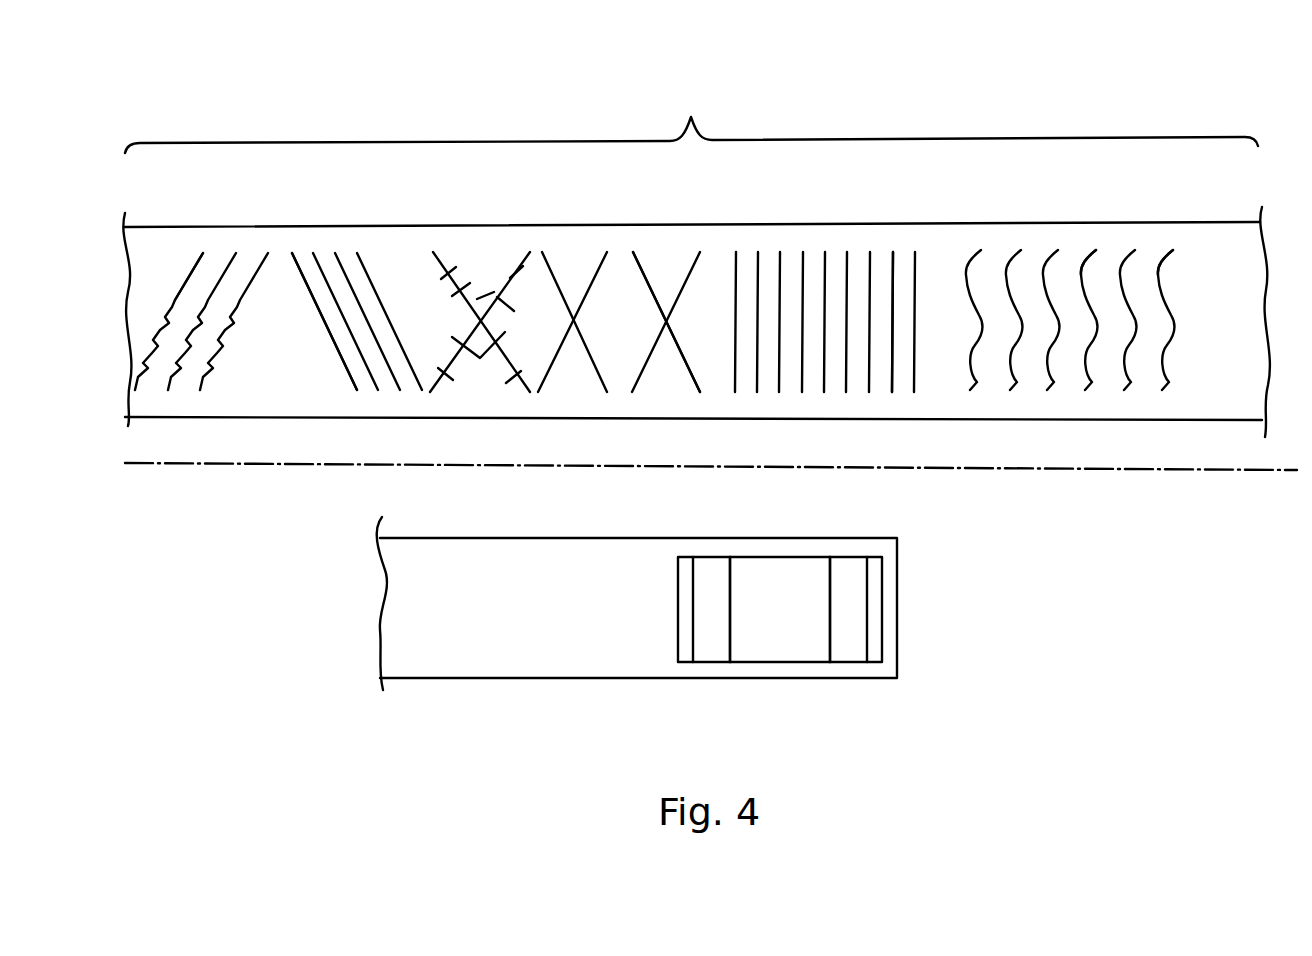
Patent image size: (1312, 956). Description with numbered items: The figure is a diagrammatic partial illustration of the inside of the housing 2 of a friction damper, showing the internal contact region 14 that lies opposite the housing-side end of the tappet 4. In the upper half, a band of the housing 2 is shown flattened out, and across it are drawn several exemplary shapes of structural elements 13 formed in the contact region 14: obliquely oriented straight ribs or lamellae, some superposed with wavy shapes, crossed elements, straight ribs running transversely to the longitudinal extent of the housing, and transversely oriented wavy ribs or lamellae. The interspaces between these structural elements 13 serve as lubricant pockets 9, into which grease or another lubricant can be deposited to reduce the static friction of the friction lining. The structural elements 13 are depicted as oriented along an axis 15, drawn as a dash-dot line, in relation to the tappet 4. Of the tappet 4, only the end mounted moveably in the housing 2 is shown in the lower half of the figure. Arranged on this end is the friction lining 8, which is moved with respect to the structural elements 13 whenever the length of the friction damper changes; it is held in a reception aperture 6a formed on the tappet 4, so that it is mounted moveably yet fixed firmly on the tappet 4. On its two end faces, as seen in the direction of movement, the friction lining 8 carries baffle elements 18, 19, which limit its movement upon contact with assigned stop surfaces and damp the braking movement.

The housing 2 is at (1177, 135).
The tappet 4 is at (497, 695).
The reception aperture 6a is at (785, 685).
The friction lining 8 is at (803, 647).
The lubricant pockets 9 is at (213, 267).
The structural elements 13 is at (230, 243).
The contact region 14 is at (691, 121).
The axis 15 is at (1143, 470).
The baffle element 18 is at (850, 623).
The baffle element 19 is at (712, 647).